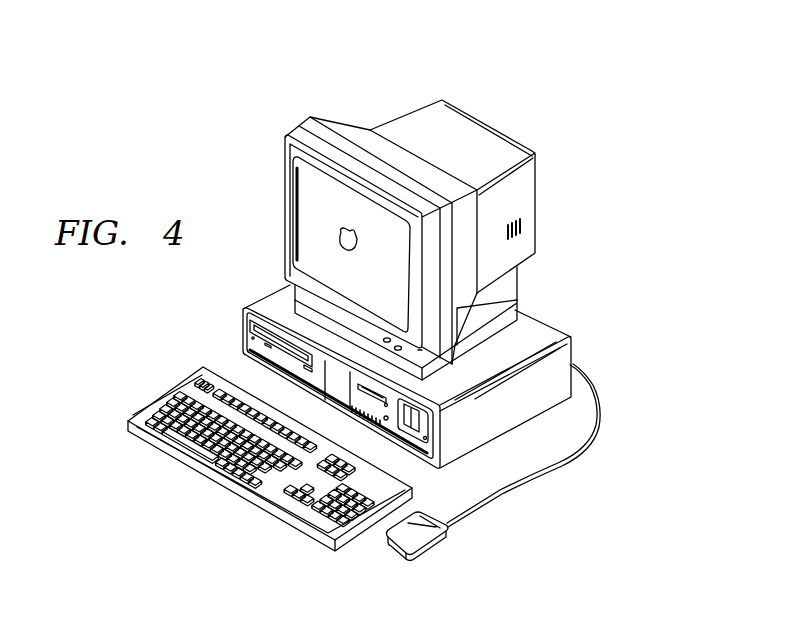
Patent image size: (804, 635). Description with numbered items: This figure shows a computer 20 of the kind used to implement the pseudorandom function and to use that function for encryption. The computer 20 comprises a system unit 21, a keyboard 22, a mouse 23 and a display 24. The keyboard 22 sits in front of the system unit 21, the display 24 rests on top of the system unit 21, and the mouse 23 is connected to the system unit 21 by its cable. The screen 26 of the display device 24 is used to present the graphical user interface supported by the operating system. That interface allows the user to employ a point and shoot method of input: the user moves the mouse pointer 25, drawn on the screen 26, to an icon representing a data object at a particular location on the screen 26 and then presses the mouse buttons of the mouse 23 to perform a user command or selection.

The computer 20 is at (245, 116).
The system unit 21 is at (242, 332).
The keyboard 22 is at (233, 490).
The mouse 23 is at (420, 553).
The display 24 is at (285, 210).
The mouse pointer 25 is at (358, 243).
The screen 26 is at (332, 222).